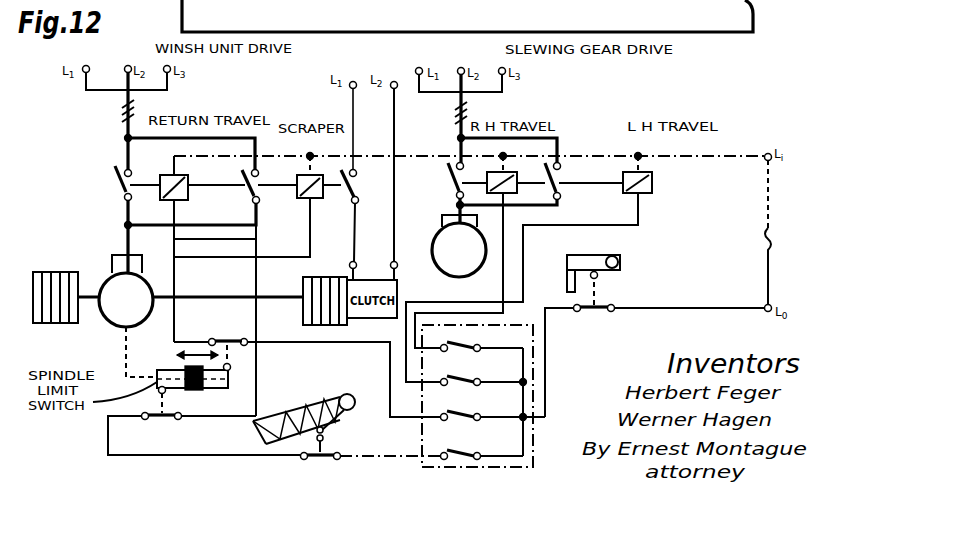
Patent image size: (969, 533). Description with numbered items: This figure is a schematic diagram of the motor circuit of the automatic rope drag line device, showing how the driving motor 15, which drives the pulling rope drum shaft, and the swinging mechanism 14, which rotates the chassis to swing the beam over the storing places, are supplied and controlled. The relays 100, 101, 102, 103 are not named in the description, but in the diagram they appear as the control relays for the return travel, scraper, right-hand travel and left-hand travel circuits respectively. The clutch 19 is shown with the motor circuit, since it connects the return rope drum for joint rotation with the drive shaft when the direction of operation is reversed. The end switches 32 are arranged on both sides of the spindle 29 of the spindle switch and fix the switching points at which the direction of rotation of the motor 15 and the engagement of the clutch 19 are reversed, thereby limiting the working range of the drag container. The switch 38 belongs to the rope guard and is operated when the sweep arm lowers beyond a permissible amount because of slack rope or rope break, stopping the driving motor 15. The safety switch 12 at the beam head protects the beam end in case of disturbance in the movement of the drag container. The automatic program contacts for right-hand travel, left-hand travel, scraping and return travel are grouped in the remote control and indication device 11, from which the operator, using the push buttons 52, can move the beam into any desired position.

The return travel relay (winch unit drive) 100 is at (187, 183).
The scraper relay 101 is at (321, 195).
The right-hand travel relay (slewing gear drive) 102 is at (517, 183).
The left-hand travel relay (slewing gear drive) 103 is at (652, 183).
The driving motor 15 is at (117, 319).
The swinging mechanism 14 is at (433, 260).
The clutch 19 is at (378, 281).
The switch 38 is at (596, 257).
The end switches 32 is at (225, 340).
The spindle 29 is at (201, 389).
The safety switch 12 is at (347, 409).
The push buttons 52 is at (525, 381).
The remote control and indication device 11 is at (536, 434).